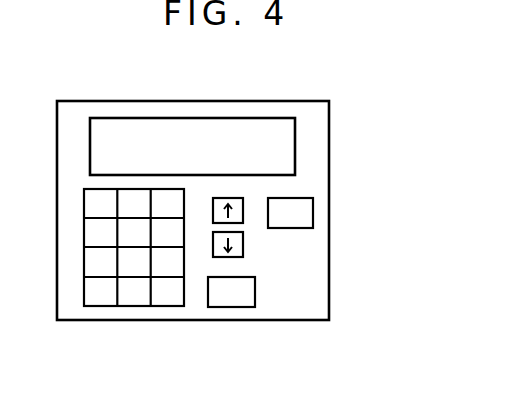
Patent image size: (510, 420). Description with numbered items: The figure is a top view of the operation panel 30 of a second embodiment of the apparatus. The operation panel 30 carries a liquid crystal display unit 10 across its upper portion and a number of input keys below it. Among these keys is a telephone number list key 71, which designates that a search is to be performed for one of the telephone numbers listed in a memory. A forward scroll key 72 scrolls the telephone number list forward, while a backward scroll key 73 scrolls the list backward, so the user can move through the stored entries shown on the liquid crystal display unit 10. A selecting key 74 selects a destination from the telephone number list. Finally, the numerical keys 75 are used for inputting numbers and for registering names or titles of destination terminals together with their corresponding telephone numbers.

The liquid crystal display unit 10 is at (295, 143).
The operation panel 30 is at (295, 321).
The telephone number list key 71 is at (313, 214).
The forward scroll key 72 is at (243, 204).
The backward scroll key 73 is at (243, 243).
The selecting key 74 is at (255, 290).
The numerical keys 75 is at (140, 307).